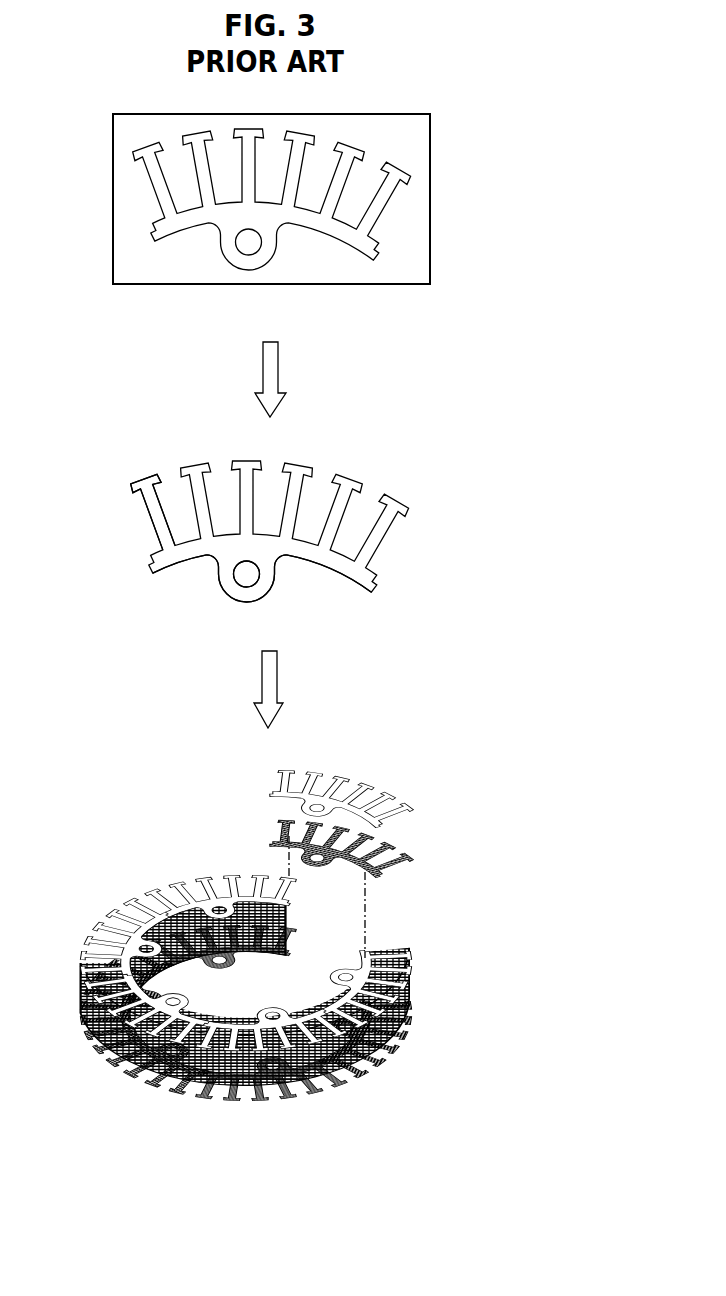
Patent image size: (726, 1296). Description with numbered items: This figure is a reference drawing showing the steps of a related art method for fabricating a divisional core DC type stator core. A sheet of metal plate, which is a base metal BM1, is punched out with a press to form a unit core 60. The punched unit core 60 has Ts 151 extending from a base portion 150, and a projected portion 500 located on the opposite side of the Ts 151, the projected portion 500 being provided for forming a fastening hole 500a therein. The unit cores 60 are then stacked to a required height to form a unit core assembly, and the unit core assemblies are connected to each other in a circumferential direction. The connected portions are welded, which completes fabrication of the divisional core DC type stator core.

The base metal BM1 is at (422, 222).
The unit core segment 60 is at (306, 557).
The T 151 is at (157, 517).
The base portion 150 is at (183, 557).
The projected portion 500 is at (243, 597).
The fastening hole 500a is at (258, 584).
The divisional core DC is at (111, 870).